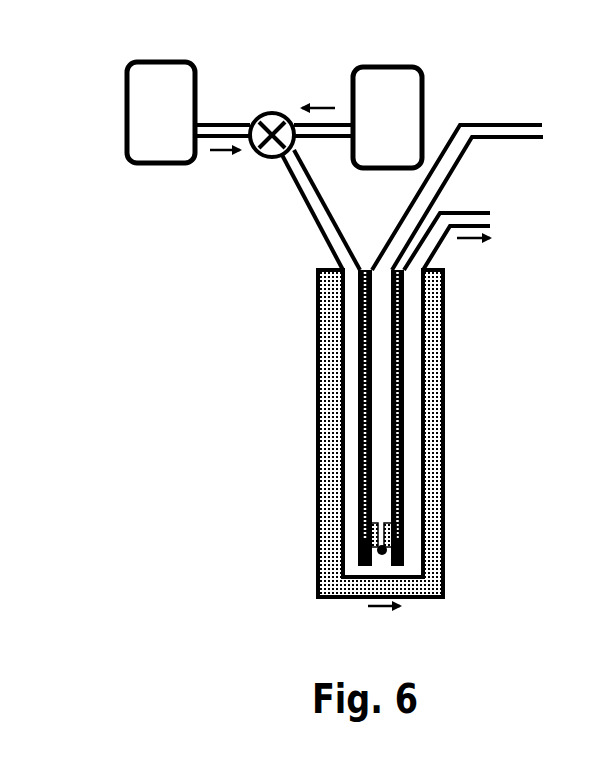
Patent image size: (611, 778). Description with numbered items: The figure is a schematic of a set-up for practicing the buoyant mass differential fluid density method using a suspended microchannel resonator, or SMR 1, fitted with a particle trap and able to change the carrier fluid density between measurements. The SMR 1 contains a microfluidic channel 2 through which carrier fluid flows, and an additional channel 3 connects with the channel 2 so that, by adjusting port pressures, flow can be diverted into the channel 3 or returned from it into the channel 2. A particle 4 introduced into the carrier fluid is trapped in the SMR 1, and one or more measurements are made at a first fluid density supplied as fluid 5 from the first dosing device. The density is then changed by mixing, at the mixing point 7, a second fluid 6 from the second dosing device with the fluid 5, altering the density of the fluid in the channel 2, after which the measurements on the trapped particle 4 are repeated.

The SMR 1 is at (330, 377).
The microfluidic channel 2 is at (315, 208).
The additional channel 3 is at (525, 122).
The particle 4 is at (367, 559).
The first fluid 5 is at (130, 153).
The second fluid 6 is at (402, 82).
The mixing point 7 is at (258, 113).